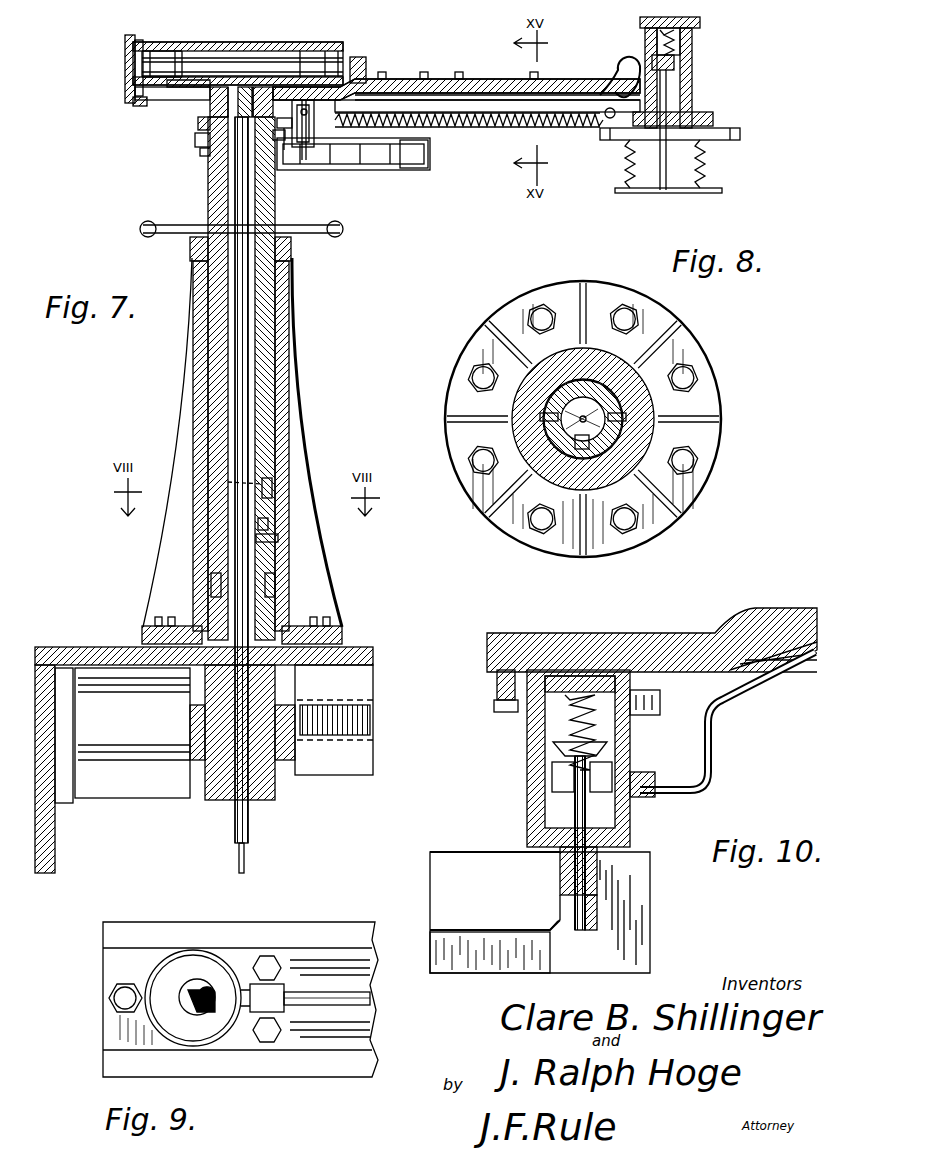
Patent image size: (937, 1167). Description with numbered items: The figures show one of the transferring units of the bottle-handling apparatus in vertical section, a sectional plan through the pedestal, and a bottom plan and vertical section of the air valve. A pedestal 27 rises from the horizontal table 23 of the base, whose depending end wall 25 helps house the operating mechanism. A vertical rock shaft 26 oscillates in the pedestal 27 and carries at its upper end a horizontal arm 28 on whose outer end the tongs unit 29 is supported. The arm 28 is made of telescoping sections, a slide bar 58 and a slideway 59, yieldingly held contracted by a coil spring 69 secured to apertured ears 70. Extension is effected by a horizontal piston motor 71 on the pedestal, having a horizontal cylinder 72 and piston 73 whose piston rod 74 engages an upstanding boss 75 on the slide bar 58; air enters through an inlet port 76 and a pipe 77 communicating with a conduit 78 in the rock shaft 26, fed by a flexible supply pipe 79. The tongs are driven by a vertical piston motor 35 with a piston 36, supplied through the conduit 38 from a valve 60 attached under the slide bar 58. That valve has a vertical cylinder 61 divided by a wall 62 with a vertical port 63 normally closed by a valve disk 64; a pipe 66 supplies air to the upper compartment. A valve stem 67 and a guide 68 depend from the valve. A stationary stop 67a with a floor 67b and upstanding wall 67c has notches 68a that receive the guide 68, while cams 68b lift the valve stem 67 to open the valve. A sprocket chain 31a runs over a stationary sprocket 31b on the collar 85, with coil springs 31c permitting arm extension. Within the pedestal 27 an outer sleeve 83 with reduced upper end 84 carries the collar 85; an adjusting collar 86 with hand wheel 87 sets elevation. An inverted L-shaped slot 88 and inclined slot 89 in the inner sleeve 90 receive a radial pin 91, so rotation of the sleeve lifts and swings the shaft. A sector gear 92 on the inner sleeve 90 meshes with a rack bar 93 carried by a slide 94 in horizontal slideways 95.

In FIG. 7, the horizontal table 23 is at (348, 648).
In FIG. 7, the end wall 25 is at (75, 866).
In FIG. 7, the vertical rock shaft 26 is at (248, 277).
In FIG. 8, the vertical rock shaft 26 is at (548, 409).
In FIG. 7, the pedestal 27 is at (328, 379).
In FIG. 8, the pedestal 27 is at (576, 517).
In FIG. 7, the horizontal arm 28 is at (476, 66).
In FIG. 10, the horizontal arm 28 is at (782, 596).
In FIG. 9, the horizontal arm 28 is at (332, 921).
In FIG. 7, the tongs unit 29 is at (764, 144).
In FIG. 7, the sprocket chain 31a is at (713, 120).
In FIG. 7, the stationary sprocket 31b is at (200, 152).
In FIG. 7, the coil springs 31c is at (432, 115).
In FIG. 7, the vertical piston motor 35 is at (702, 52).
In FIG. 7, the piston 36 is at (692, 70).
In FIG. 10, the conduit 38 is at (728, 685).
In FIG. 9, the conduit 38 is at (365, 996).
In FIG. 7, the slide bar 58 is at (540, 80).
In FIG. 10, the slide bar 58 is at (720, 625).
In FIG. 9, the slide bar 58 is at (172, 935).
In FIG. 7, the slideway 59 is at (405, 79).
In FIG. 7, the valve 60 is at (314, 140).
In FIG. 10, the valve 60 is at (517, 774).
In FIG. 9, the valve 60 is at (165, 1043).
In FIG. 10, the vertical cylinder 61 is at (530, 722).
In FIG. 10, the wall 62 is at (553, 750).
In FIG. 10, the vertical port 63 is at (582, 777).
In FIG. 10, the valve disk 64 is at (604, 734).
In FIG. 7, the pipe 66 is at (285, 150).
In FIG. 10, the valve stem 67 is at (575, 870).
In FIG. 9, the valve stem 67 is at (205, 990).
In FIG. 10, the stop 67a is at (640, 937).
In FIG. 7, the floor 67b is at (372, 166).
In FIG. 10, the floor 67b is at (512, 960).
In FIG. 7, the upstanding wall 67c is at (410, 150).
In FIG. 10, the upstanding wall 67c is at (468, 860).
In FIG. 7, the guide 68 is at (307, 160).
In FIG. 10, the guide 68 is at (575, 882).
In FIG. 9, the guide 68 is at (180, 1003).
In FIG. 10, the notches 68a is at (597, 910).
In FIG. 10, the cam 68b is at (550, 930).
In FIG. 7, the coil spring 69 is at (528, 128).
In FIG. 7, the apertured ears 70 is at (452, 128).
In FIG. 7, the horizontal piston motor 71 is at (269, 40).
In FIG. 7, the horizontal cylinder 72 is at (290, 43).
In FIG. 7, the piston 73 is at (158, 58).
In FIG. 7, the piston rod 74 is at (205, 62).
In FIG. 7, the upstanding boss 75 is at (356, 57).
In FIG. 7, the inlet port 76 is at (133, 101).
In FIG. 7, the pipe 77 is at (180, 100).
In FIG. 7, the conduit 78 is at (195, 138).
In FIG. 7, the flexible supply pipe 79 is at (239, 850).
In FIG. 7, the outer sleeve 83 is at (289, 305).
In FIG. 7, the diametrically reduced upper end 84 is at (258, 207).
In FIG. 7, the collar 85 is at (208, 188).
In FIG. 7, the adjusting collar 86 is at (291, 248).
In FIG. 7, the hand wheel 87 is at (322, 228).
In FIG. 7, the inverted L-shaped slot 88 is at (272, 486).
In FIG. 8, the inverted L-shaped slot 88 is at (600, 386).
In FIG. 7, the inclined slot 89 is at (268, 524).
In FIG. 8, the inclined slot 89 is at (575, 444).
In FIG. 7, the inner sleeve 90 is at (210, 605).
In FIG. 8, the inner sleeve 90 is at (540, 417).
In FIG. 7, the radial pin 91 is at (278, 538).
In FIG. 8, the radial pin 91 is at (626, 417).
In FIG. 7, the sector gear 92 is at (190, 722).
In FIG. 7, the rack bar 93 is at (360, 720).
In FIG. 7, the slide 94 is at (360, 750).
In FIG. 7, the horizontal slideways 95 is at (130, 770).